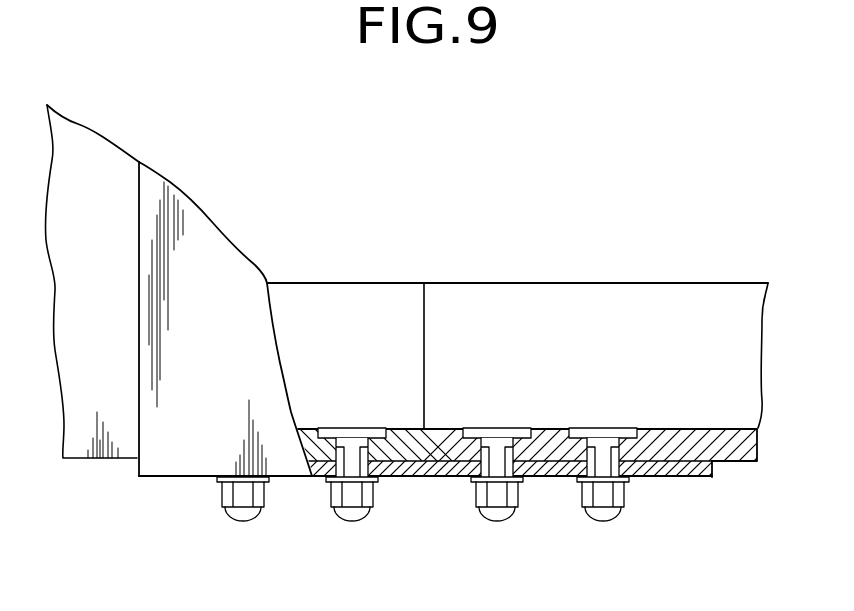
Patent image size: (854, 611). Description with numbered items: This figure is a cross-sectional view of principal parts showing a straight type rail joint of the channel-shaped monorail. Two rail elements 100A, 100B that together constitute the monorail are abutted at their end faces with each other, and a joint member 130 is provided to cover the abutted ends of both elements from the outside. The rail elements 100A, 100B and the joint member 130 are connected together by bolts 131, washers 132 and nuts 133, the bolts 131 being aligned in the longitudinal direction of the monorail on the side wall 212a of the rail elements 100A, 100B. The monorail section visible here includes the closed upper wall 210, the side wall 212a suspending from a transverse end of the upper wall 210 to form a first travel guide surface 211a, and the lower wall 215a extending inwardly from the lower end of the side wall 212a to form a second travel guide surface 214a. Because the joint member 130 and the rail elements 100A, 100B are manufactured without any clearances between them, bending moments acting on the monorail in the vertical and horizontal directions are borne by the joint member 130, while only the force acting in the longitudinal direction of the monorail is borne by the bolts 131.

The rail element 100A is at (383, 283).
The rail element 100B is at (698, 283).
The joint member 130 is at (192, 450).
The bolt 131 is at (613, 430).
The washer 132 is at (628, 485).
The nut 133 is at (603, 522).
The upper wall 210 is at (99, 450).
The first travel guide surface 211a is at (737, 430).
The side wall 212a is at (733, 453).
The second travel guide surface 214a is at (375, 370).
The lower wall 215a is at (344, 298).